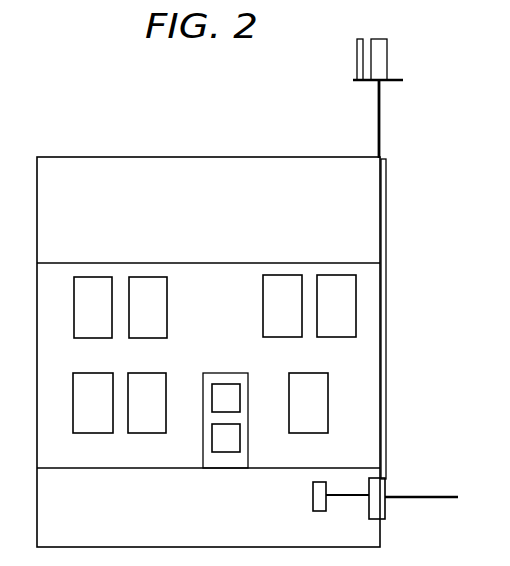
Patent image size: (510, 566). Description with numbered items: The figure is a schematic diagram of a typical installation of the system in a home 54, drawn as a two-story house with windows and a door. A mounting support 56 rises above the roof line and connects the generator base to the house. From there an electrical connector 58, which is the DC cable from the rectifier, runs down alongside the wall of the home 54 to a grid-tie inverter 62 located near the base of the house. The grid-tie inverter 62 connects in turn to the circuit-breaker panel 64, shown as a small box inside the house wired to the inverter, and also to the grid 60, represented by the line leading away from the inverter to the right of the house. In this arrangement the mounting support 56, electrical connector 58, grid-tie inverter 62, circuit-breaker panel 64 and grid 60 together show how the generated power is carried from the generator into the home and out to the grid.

The home 54 is at (275, 157).
The mounting support 56 is at (381, 121).
The electrical connector 58 is at (383, 303).
The grid 60 is at (425, 494).
The grid-tie inverter 62 is at (386, 506).
The circuit-breaker panel 64 is at (311, 495).